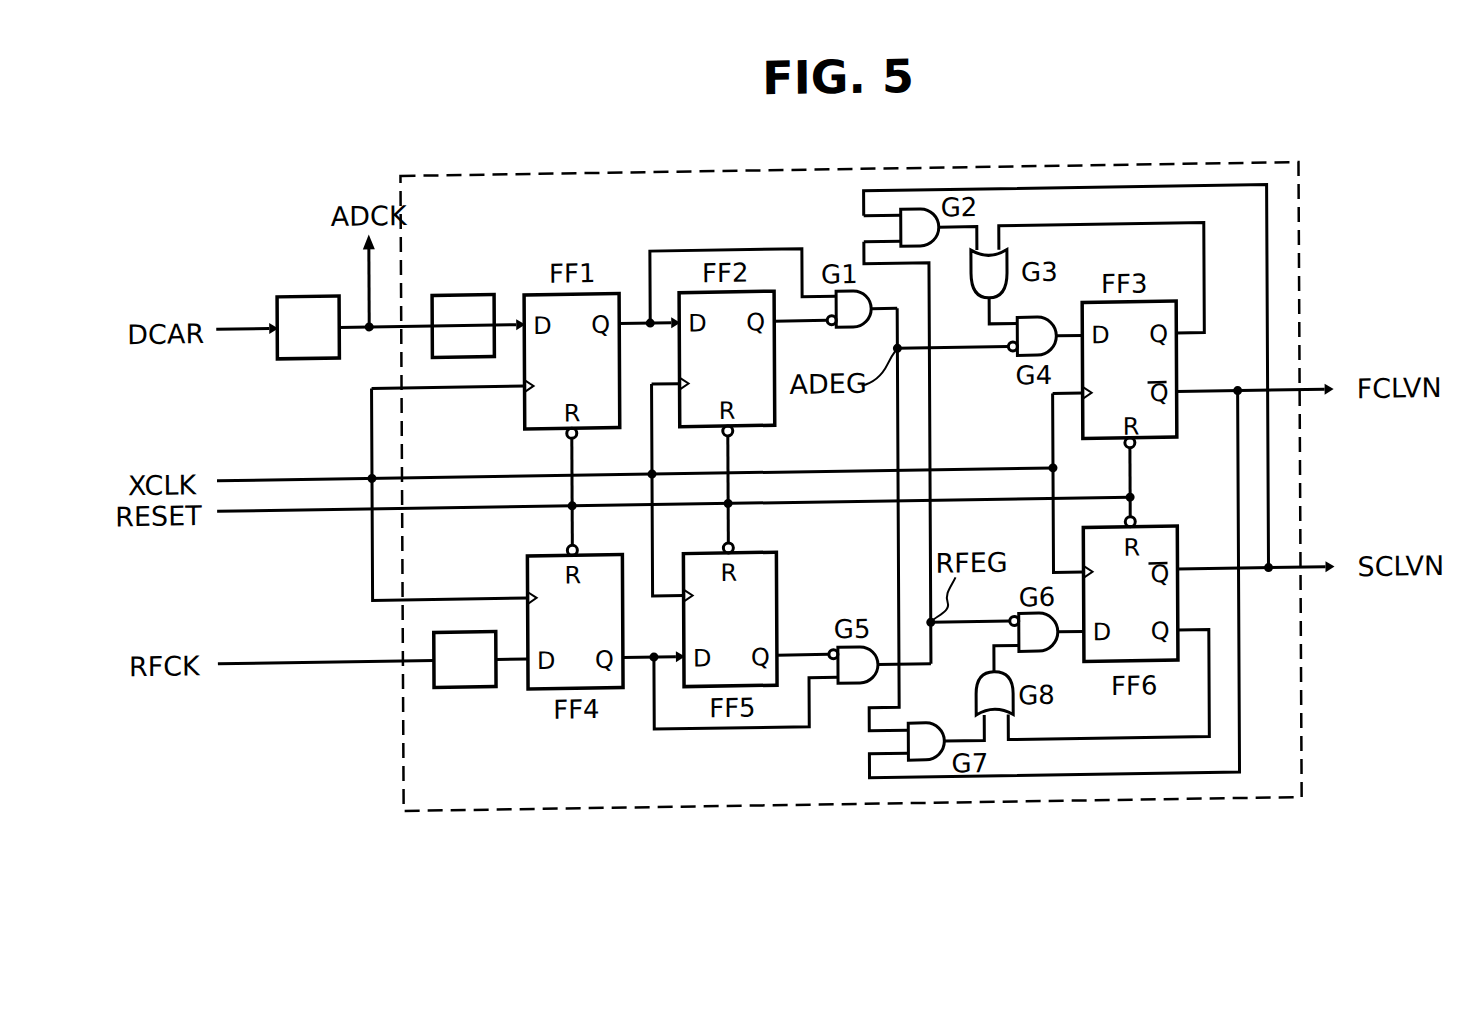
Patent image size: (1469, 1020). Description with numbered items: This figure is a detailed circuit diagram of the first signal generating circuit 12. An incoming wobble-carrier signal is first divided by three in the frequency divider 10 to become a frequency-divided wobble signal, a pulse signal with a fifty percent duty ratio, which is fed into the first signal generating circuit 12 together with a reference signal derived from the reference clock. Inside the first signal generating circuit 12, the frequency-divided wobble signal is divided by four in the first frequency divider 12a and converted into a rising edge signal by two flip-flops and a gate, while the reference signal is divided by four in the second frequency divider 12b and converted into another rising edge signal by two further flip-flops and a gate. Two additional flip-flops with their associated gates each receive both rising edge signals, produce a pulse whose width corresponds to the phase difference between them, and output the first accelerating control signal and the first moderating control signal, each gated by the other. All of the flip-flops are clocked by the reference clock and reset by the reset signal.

The frequency divider 10 is at (308, 295).
The first signal generating circuit 12 is at (1300, 262).
The first frequency divider 12a is at (461, 296).
The second frequency divider 12b is at (468, 688).